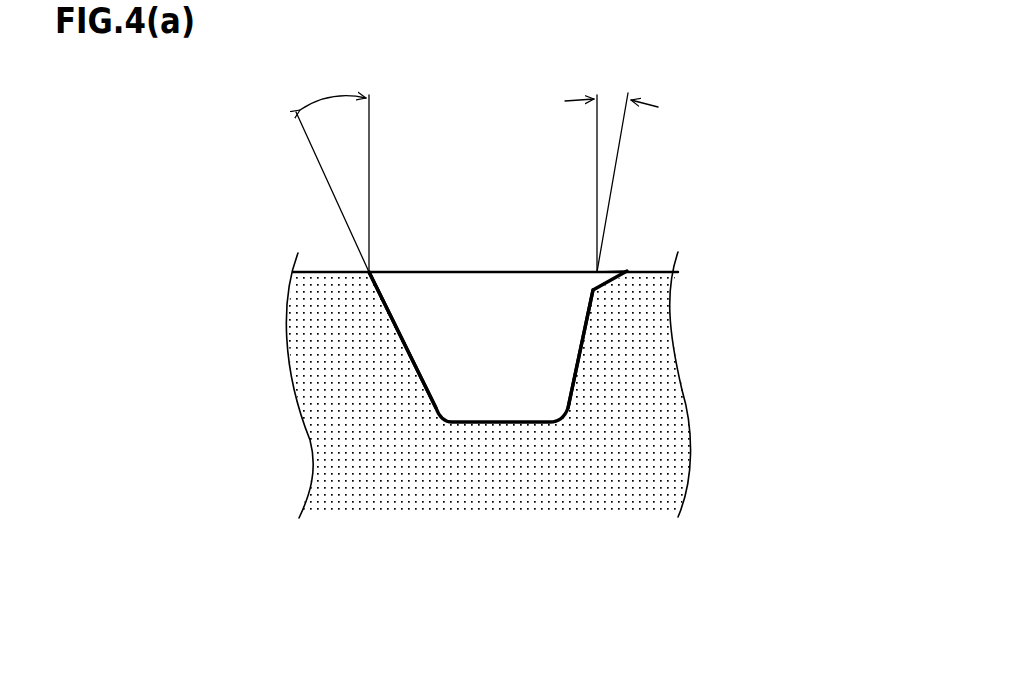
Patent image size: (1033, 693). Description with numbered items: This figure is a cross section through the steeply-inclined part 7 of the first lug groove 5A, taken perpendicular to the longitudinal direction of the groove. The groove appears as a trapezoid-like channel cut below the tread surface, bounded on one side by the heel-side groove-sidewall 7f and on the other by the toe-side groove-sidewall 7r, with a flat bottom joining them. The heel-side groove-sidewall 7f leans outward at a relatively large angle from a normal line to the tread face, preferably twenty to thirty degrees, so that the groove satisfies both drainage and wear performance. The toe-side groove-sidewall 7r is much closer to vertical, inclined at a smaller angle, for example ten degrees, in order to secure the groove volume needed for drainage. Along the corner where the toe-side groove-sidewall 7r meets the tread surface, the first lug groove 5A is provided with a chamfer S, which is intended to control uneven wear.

The first lug groove 5A is at (485, 268).
The steeply-inclined part 7 is at (498, 263).
The heel-side groove-sidewall 7f is at (419, 386).
The toe-side groove-sidewall 7r is at (580, 384).
The chamfer S is at (613, 277).